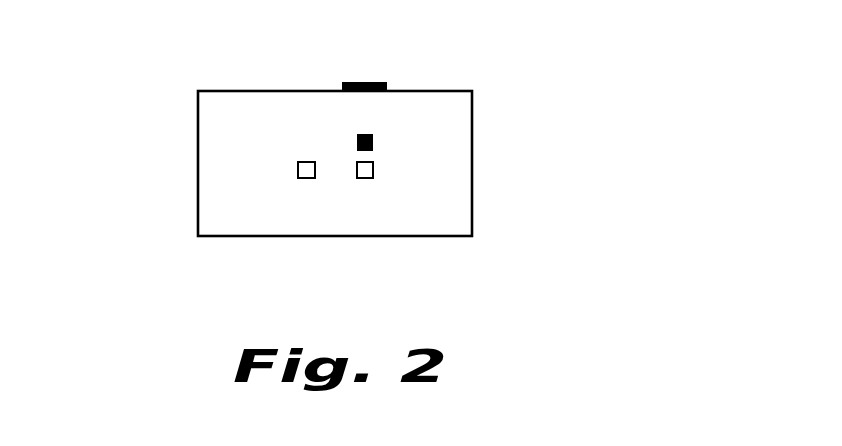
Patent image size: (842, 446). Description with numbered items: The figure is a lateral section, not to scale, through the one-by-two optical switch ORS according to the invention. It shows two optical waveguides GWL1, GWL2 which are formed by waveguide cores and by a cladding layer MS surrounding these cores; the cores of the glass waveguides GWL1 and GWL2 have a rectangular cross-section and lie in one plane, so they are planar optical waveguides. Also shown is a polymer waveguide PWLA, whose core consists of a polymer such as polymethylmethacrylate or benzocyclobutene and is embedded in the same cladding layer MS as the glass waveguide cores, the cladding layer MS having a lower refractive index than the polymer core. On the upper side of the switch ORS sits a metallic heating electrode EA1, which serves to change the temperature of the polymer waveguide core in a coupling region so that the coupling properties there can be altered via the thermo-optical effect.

The cladding layer MS is at (261, 163).
The heating electrode EA1 is at (409, 61).
The polymer waveguide PWLA is at (465, 129).
The glass waveguide GWL1 is at (466, 192).
The glass waveguide GWL2 is at (205, 192).
The switch ORS is at (605, 30).